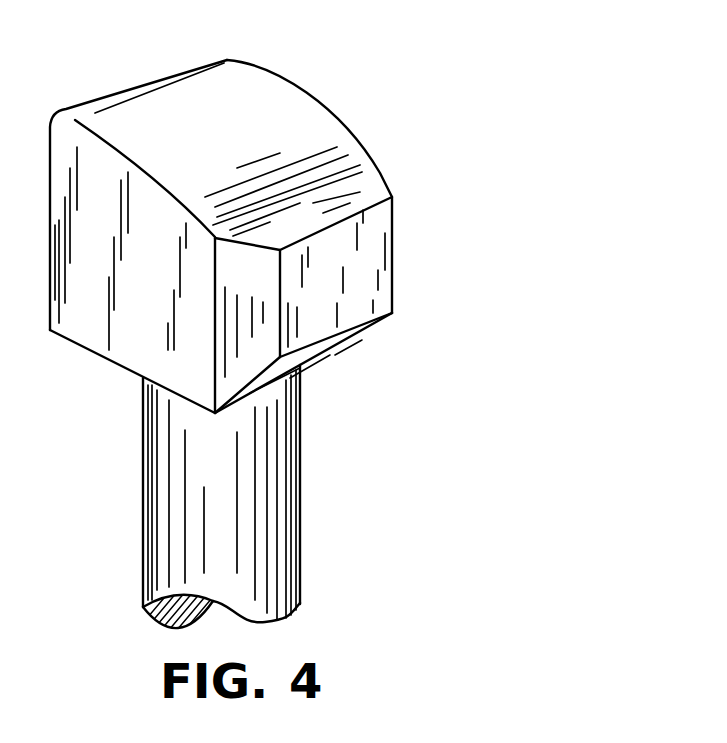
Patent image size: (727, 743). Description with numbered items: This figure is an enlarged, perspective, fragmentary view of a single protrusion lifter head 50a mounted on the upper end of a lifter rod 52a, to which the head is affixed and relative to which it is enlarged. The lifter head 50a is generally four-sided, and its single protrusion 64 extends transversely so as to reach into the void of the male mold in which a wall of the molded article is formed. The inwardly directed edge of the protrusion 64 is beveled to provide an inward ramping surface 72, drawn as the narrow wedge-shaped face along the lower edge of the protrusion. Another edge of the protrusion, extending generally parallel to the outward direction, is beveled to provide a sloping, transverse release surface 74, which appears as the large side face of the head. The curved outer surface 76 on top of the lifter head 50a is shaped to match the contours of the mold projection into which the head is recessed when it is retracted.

The single protrusion lifter head 50a is at (339, 103).
The outer surface 76 is at (252, 97).
The transverse release surface 74 is at (233, 306).
The protrusion 64 is at (393, 237).
The inward ramping surface 72 is at (317, 353).
The lifter rod 52a is at (142, 493).